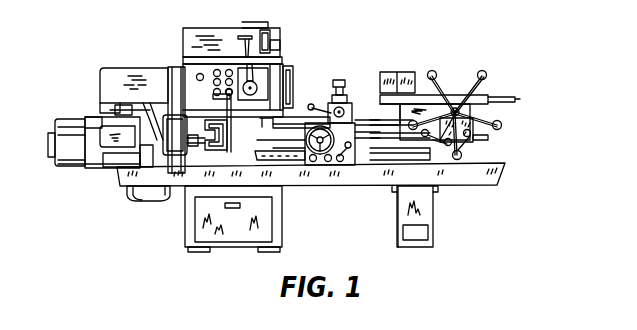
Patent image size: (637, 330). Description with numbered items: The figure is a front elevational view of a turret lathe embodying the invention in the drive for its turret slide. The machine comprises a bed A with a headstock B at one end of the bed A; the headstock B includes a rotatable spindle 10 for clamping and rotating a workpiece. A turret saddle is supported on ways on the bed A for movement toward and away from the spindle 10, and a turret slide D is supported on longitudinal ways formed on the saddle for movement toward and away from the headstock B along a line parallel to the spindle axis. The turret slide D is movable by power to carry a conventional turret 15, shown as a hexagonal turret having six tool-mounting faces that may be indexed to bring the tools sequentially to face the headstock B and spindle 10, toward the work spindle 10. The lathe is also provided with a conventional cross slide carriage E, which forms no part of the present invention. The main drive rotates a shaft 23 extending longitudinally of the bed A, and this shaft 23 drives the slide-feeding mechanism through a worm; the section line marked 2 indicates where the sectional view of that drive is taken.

The bed A is at (319, 170).
The headstock B is at (204, 88).
The rotatable spindle 10 is at (293, 77).
The cross slide carriage E is at (341, 135).
The turret slide D is at (428, 97).
The turret 15 is at (402, 90).
The section line 2- 2 is at (430, 62).
The shaft 23 is at (256, 143).